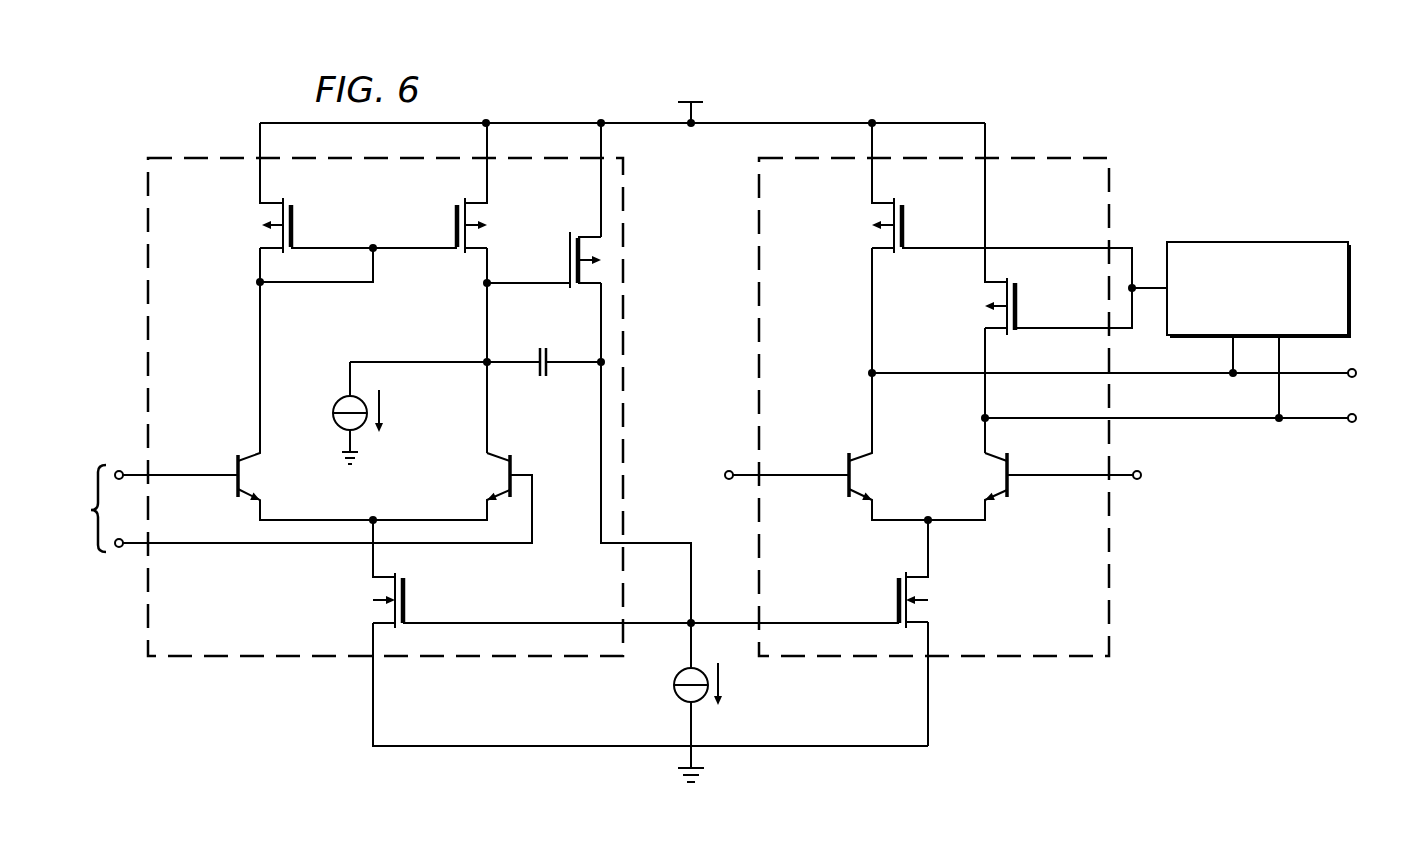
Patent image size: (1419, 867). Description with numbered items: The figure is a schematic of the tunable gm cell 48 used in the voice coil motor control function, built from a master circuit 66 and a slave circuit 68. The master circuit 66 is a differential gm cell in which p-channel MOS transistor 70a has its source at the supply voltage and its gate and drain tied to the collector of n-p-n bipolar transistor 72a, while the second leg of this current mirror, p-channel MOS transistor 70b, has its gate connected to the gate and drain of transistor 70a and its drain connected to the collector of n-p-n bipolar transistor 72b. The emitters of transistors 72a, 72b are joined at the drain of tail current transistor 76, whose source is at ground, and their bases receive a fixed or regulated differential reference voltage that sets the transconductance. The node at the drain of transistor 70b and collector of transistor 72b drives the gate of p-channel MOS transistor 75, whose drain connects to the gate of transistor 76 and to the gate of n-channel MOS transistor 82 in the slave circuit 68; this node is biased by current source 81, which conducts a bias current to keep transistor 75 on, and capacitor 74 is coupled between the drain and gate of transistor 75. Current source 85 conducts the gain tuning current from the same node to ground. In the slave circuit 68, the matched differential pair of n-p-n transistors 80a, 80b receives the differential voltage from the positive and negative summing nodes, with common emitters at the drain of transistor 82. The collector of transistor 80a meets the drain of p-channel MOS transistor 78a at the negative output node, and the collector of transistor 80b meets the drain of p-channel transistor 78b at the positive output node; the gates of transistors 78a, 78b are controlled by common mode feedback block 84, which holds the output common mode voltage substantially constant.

The tunable gm cell 48 is at (1188, 108).
The master circuit 66 is at (278, 668).
The slave circuit 68 is at (997, 668).
The p-channel MOS transistor 70a is at (292, 215).
The p-channel MOS transistor 70b is at (457, 215).
The n-p-n bipolar transistor 72a is at (238, 468).
The n-p-n bipolar transistor 72b is at (512, 468).
The capacitor 74 is at (543, 347).
The p-channel MOS transistor 75 is at (570, 250).
The n-channel MOS transistor 76 is at (404, 590).
The p-channel MOS transistor 78a is at (903, 215).
The p-channel MOS transistor 78b is at (1016, 295).
The n-p-n transistor 80a is at (849, 482).
The n-p-n transistor 80b is at (1009, 482).
The current source 81 is at (676, 692).
The n-channel MOS transistor 82 is at (898, 590).
The common mode feedback block 84 is at (1258, 241).
The current source 85 is at (334, 416).